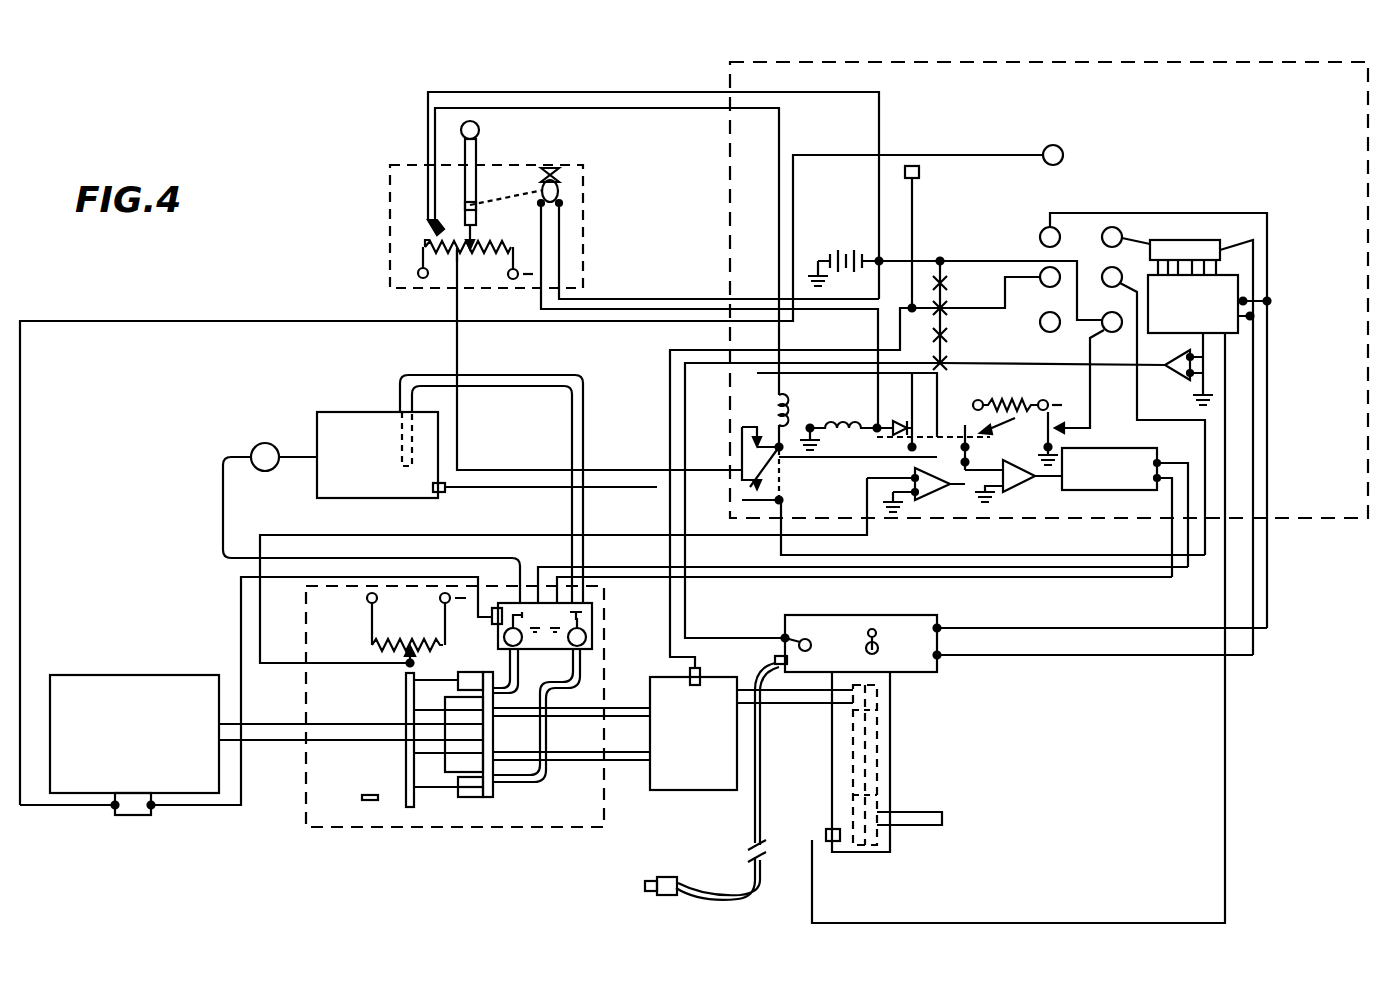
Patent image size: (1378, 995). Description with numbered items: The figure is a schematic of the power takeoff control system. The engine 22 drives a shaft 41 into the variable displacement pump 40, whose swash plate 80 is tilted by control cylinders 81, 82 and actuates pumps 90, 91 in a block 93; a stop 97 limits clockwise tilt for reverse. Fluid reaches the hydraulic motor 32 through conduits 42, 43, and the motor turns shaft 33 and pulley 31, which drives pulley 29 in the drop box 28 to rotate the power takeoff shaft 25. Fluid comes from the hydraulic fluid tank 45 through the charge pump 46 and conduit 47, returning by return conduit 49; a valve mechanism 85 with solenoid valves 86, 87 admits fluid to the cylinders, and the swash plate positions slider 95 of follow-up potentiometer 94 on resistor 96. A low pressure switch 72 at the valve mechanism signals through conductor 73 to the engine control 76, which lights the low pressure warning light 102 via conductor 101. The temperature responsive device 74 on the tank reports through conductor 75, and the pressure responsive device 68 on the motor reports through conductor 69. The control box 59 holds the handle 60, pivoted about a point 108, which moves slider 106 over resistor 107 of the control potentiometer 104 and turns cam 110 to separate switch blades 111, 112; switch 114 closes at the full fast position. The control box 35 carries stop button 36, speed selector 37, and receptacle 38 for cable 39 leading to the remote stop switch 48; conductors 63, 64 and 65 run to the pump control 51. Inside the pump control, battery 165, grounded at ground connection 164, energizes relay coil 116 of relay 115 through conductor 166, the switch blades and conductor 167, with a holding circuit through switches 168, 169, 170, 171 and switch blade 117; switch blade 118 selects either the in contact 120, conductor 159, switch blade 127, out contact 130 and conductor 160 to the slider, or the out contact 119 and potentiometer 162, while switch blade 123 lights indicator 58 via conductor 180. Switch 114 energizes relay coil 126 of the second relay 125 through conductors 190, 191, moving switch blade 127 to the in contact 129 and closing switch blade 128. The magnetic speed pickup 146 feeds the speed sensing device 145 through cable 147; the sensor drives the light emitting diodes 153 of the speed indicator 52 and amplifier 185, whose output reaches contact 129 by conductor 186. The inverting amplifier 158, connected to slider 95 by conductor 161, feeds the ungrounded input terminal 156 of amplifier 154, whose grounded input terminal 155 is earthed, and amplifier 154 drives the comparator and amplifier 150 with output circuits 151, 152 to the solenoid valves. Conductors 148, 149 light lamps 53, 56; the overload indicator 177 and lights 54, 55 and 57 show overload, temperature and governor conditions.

The conductor 190 is at (428, 95).
The conductor 191 is at (458, 108).
The handle 60 is at (465, 142).
The pivot point 108 is at (465, 205).
The switch 114 is at (428, 222).
The control box 59 is at (583, 253).
The resistor 107 is at (425, 248).
The control potentiometer 104 is at (445, 272).
The slider 106 is at (462, 262).
The conductor 160 is at (460, 352).
The switch blade 111 is at (548, 176).
The cam 110 is at (551, 180).
The switch blade 112 is at (558, 198).
The conductor 166 is at (620, 299).
The conductor 167 is at (640, 310).
The pump control 51 is at (730, 248).
The conductor 101 is at (182, 322).
The low pressure warning light 102 is at (1044, 155).
The overload indicator 177 is at (921, 176).
The battery 165 is at (830, 260).
The ground connection 164 is at (822, 281).
The ignition switch 168 is at (946, 282).
The load switch 169 is at (946, 306).
The temperature switch 170 is at (960, 332).
The emergency stop switch 171 is at (960, 363).
The indicator light 54 is at (1044, 285).
The temperature indicator 55 is at (1044, 331).
The indicator light 53 is at (1043, 234).
The speed indicator 52 is at (1238, 242).
The indicator light 56 is at (1122, 236).
The indicator light 57 is at (1116, 268).
The indicator 58 is at (1112, 333).
The light emitting diodes 153 is at (1190, 240).
The conductor 148 is at (1267, 246).
The conductor 149 is at (1253, 266).
The conductor 64 is at (1132, 628).
The conductor 63 is at (1130, 655).
The conductor 180 is at (1137, 294).
The speed sensing device 145 is at (1240, 331).
The amplifier 185 is at (1178, 360).
The conductor 186 is at (1066, 364).
The switch blade 123 is at (1092, 420).
The electrical cable 147 is at (1225, 815).
The magnetic speed pickup 146 is at (828, 830).
The relay coil 126 is at (773, 400).
The in contact 129 is at (755, 432).
The out contact 130 is at (757, 450).
The switch blade 127 is at (801, 475).
The switch blade 128 is at (742, 500).
The output circuit 151 is at (1178, 555).
The conductor 159 is at (864, 478).
The second relay 125 is at (817, 396).
The relay coil 116 is at (840, 422).
The relay 115 is at (852, 424).
The switch blade 117 is at (913, 422).
The in contact 120 is at (965, 404).
The potentiometer 162 is at (1018, 400).
The out contact 119 is at (1019, 427).
The switch blade 118 is at (969, 436).
The ungrounded input terminal 156 is at (948, 488).
The inverting amplifier 158 is at (900, 512).
The grounded input terminal 155 is at (1013, 487).
The amplifier 154 is at (1023, 502).
The comparator and amplifier 150 is at (1108, 448).
The output circuit 152 is at (1176, 463).
The low pressure switch 72 is at (532, 600).
The hydraulic fluid tank 45 is at (376, 412).
The return conduit 49 is at (583, 405).
The charge pump 46 is at (263, 443).
The conduit 47 is at (223, 505).
The conductor 161 is at (342, 526).
The temperature responsive device 74 is at (441, 492).
The conductor 75 is at (495, 487).
The conductor 69 is at (670, 514).
The conductor 65 is at (685, 606).
The conductor 73 is at (241, 610).
The engine 22 is at (119, 675).
The engine control 76 is at (130, 815).
The shaft 41 is at (291, 724).
The conduit 42 is at (623, 708).
The conduit 43 is at (621, 760).
The pressure responsive device 68 is at (700, 673).
The control box 35 is at (933, 616).
The stop button 36 is at (784, 637).
The speed selector 37 is at (873, 629).
The receptacle 38 is at (788, 660).
The cable 39 is at (752, 905).
The switch 48 is at (660, 896).
The pulley 31 is at (880, 700).
The drop box 28 is at (890, 750).
The pulley 29 is at (878, 805).
The power takeoff shaft 25 is at (942, 818).
The shaft 33 is at (776, 703).
The hydraulic motor 32 is at (696, 791).
The variable displacement pump 40 is at (407, 828).
The follow-up potentiometer 94 is at (408, 615).
The resistor 96 is at (391, 646).
The slider 95 is at (405, 661).
The swash plate 80 is at (406, 773).
The control cylinder 81 is at (478, 676).
The pump 90 is at (481, 720).
The pump 91 is at (478, 745).
The control cylinder 82 is at (480, 795).
The block 93 is at (500, 772).
The stop 97 is at (366, 802).
The valve mechanism 85 is at (592, 613).
The solenoid valve 86 is at (494, 624).
The solenoid valve 87 is at (583, 619).